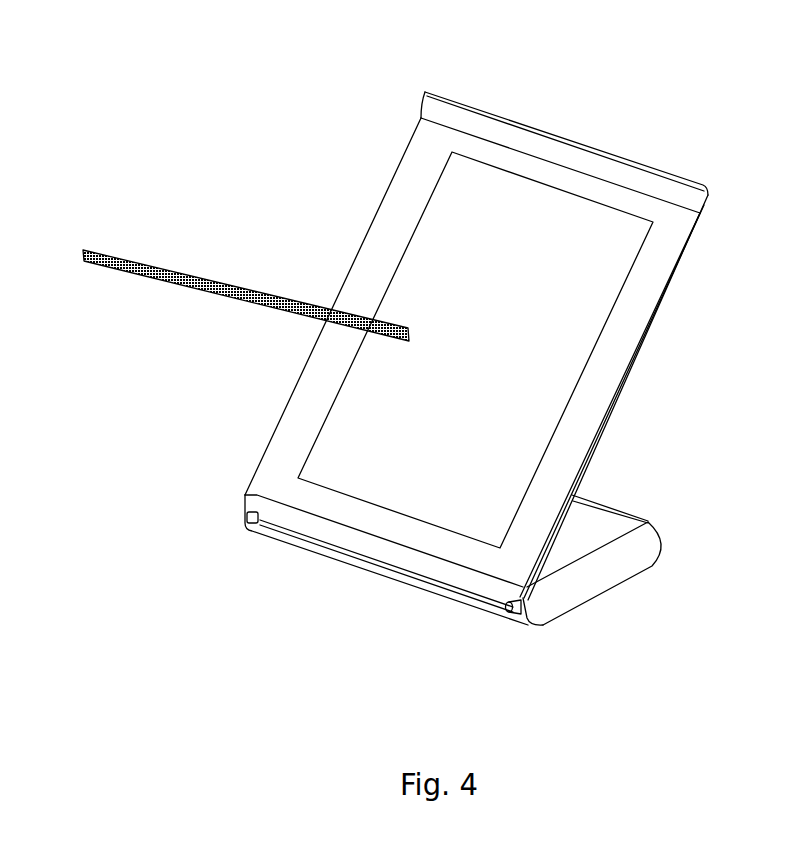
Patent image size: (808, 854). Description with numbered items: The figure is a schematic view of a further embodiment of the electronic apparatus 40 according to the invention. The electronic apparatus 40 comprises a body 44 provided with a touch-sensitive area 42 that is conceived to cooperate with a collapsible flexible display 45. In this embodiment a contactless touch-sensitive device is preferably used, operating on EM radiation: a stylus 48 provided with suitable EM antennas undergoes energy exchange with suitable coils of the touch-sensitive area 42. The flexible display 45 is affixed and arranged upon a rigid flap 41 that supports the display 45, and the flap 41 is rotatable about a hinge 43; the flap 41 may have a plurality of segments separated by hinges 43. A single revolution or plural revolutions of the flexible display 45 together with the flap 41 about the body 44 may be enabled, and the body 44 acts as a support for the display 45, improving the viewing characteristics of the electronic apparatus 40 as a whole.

The electronic apparatus 40 is at (303, 62).
The rigid flap 41 is at (670, 268).
The touch-sensitive area 42 is at (590, 517).
The hinge 43 is at (520, 613).
The body 44 is at (640, 547).
The collapsible flexible display 45 is at (425, 260).
The stylus 48 is at (188, 282).